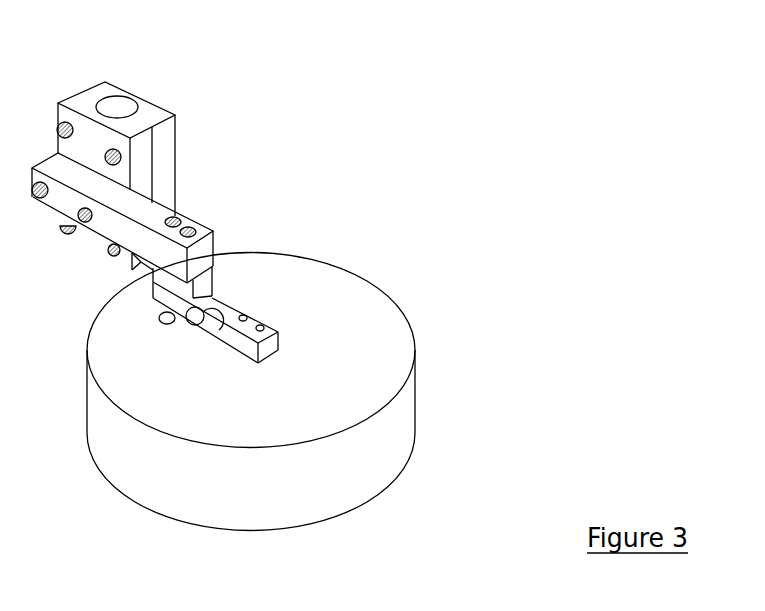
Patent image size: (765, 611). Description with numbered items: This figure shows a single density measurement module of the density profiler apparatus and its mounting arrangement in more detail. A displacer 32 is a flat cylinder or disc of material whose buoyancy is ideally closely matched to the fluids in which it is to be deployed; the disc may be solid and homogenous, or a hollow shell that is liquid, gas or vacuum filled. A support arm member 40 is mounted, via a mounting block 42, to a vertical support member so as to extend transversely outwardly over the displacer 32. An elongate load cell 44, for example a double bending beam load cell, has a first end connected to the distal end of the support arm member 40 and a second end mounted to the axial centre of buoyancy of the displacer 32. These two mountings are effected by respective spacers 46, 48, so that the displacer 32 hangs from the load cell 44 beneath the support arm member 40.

The displacer 32 is at (370, 415).
The support arm member 40 is at (212, 232).
The mounting block 42 is at (165, 110).
The elongate load cell 44 is at (280, 333).
The spacer 46 is at (280, 350).
The spacer 48 is at (213, 253).